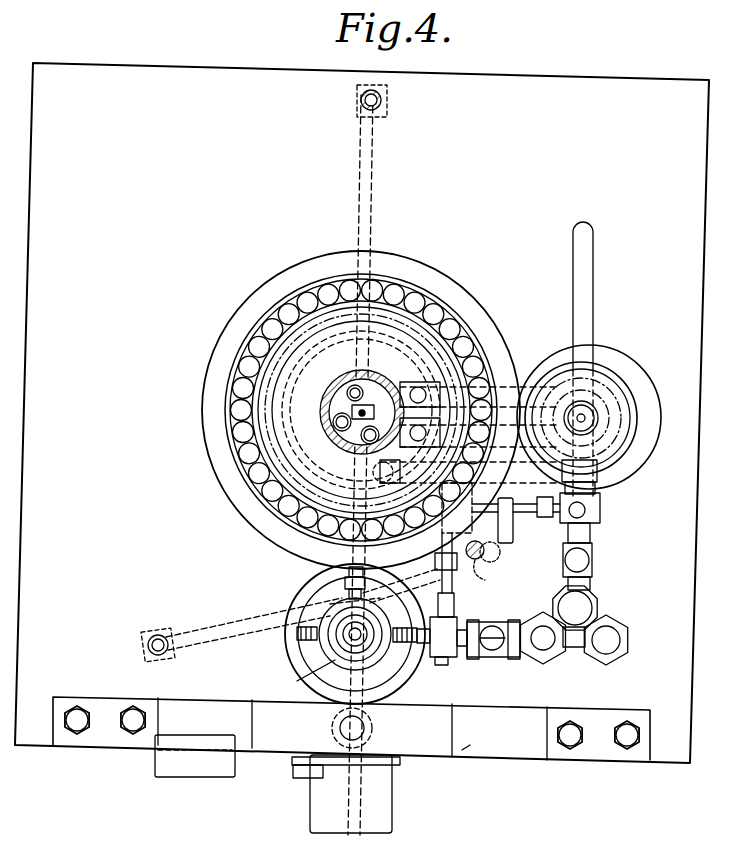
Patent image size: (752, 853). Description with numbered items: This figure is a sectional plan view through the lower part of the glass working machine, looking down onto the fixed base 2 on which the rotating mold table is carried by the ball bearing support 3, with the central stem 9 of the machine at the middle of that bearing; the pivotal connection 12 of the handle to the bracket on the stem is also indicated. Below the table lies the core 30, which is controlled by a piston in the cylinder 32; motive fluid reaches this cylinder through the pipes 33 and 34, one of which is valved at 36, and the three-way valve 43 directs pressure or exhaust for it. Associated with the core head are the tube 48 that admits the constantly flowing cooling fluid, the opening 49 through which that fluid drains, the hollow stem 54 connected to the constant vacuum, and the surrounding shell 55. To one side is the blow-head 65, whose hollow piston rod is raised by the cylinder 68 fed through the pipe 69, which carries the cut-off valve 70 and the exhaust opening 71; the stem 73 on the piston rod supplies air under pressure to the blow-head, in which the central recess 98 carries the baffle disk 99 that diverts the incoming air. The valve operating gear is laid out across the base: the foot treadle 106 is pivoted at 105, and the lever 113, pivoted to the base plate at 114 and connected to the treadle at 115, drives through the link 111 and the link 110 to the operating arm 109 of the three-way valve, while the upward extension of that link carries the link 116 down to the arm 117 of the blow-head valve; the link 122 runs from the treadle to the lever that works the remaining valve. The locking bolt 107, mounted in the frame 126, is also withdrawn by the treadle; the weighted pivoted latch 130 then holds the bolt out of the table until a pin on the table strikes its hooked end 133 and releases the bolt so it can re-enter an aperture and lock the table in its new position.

The base 2 is at (362, 413).
The ball bearing support 3 is at (230, 419).
The central stem 9 is at (320, 413).
The pivotal connection 12 is at (540, 518).
The core 30 is at (292, 684).
The cylinder 32 is at (290, 596).
The pipe 33 is at (540, 665).
The pipe 34 is at (596, 665).
The valve 36 is at (490, 660).
The three-way valve 43 is at (442, 629).
The tube 48 is at (418, 668).
The opening 49 is at (342, 572).
The hollow stem 54 is at (298, 646).
The shell 55 is at (370, 653).
The blow-head 65 is at (608, 382).
The cylinder 68 is at (555, 350).
The pipe 69 is at (594, 605).
The cut-off valve 70 is at (595, 558).
The exhaust opening 71 is at (603, 525).
The stem 73 is at (593, 364).
The central recess 98 is at (598, 426).
The disk 99 is at (588, 437).
The pivot 105 is at (385, 102).
The foot treadle 106 is at (375, 175).
The locking bolt 107 is at (364, 730).
The operating arm 109 is at (440, 566).
The link 110 is at (470, 568).
The link 111 is at (500, 568).
The lever 113 is at (254, 624).
The pivot 114 is at (166, 655).
The connection 115 is at (367, 598).
The link 116 is at (500, 556).
The arm 117 is at (513, 528).
The link 122 is at (372, 384).
The frame 126 is at (466, 746).
The pivoted latch 130 is at (262, 760).
The hooked end 133 is at (400, 766).